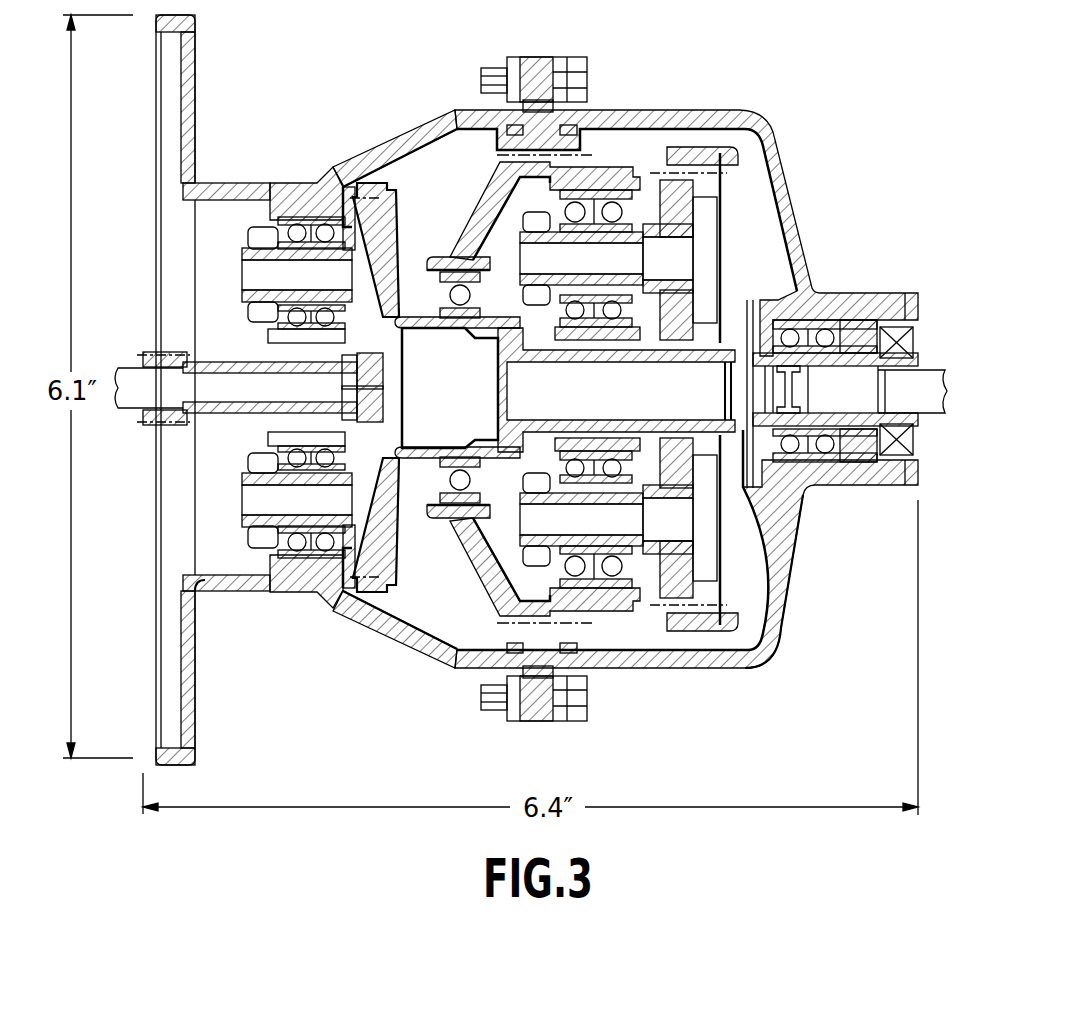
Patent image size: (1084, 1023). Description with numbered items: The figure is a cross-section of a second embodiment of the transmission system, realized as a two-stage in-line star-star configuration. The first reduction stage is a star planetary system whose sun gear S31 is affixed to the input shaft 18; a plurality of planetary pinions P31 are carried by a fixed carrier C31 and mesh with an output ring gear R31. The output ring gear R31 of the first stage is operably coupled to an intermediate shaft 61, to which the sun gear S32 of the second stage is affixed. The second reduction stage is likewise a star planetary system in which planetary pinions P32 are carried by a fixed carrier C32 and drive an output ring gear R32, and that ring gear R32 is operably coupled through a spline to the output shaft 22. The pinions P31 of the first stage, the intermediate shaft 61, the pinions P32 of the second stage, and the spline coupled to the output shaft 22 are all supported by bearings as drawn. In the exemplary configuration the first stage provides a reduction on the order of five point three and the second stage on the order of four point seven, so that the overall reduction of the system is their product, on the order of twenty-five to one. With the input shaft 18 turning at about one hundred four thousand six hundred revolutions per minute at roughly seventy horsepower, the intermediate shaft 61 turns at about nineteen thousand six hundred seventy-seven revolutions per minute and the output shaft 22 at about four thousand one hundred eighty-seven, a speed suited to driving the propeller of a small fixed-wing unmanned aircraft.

The input shaft 18 is at (128, 412).
The output shaft 22 is at (927, 406).
The intermediate shaft 61 is at (436, 468).
The fixed carrier C31 is at (300, 196).
The planetary pinions P31 is at (398, 212).
The output ring gear R31 is at (399, 131).
The sun gear S31 is at (392, 372).
The fixed carrier C32 is at (614, 180).
The planetary pinions P32 is at (718, 190).
The output ring gear R32 is at (712, 628).
The sun gear S32 is at (733, 340).